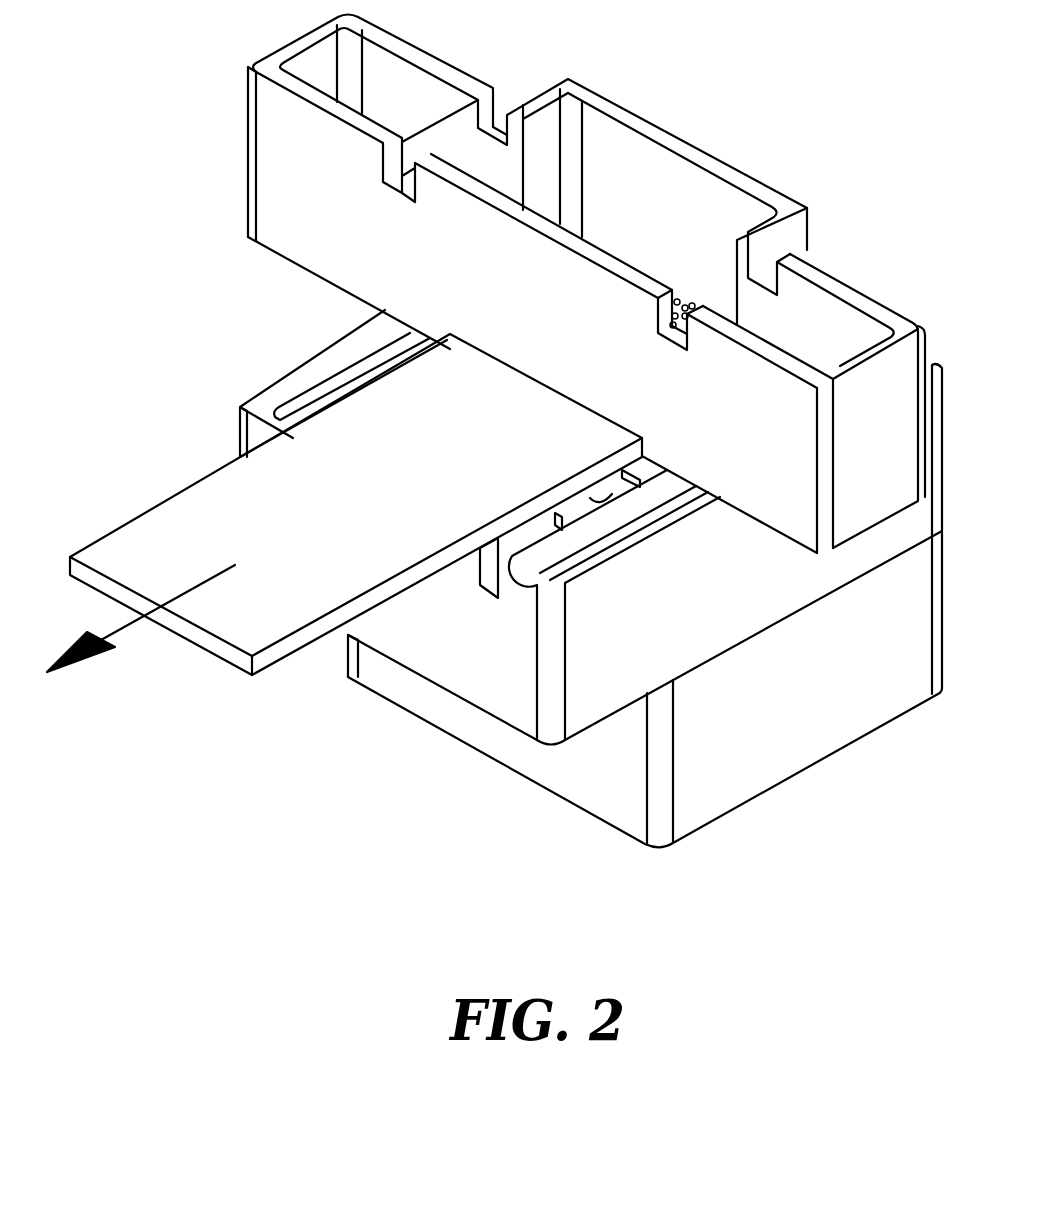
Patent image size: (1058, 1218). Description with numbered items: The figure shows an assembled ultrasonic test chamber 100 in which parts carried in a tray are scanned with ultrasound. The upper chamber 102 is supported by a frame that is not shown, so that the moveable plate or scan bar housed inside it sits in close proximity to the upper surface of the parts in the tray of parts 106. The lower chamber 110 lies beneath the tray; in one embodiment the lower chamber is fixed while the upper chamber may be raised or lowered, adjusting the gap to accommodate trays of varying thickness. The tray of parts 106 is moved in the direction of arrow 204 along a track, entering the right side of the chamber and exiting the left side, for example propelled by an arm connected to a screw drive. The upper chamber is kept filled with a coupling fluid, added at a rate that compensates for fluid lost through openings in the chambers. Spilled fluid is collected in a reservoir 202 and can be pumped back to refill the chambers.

The ultrasonic test chamber 100 is at (312, 888).
The upper chamber 102 is at (810, 228).
The tray of parts 106 is at (123, 523).
The lower chamber 110 is at (260, 396).
The reservoir 202 is at (818, 762).
The arrow 204 is at (127, 631).